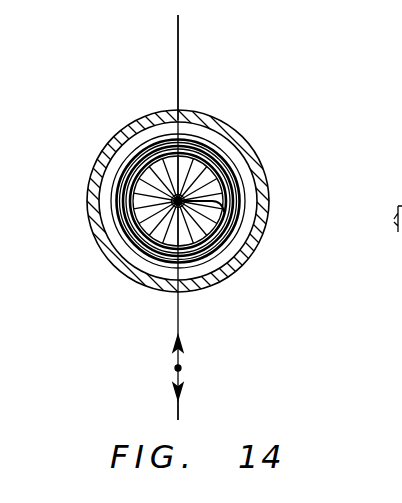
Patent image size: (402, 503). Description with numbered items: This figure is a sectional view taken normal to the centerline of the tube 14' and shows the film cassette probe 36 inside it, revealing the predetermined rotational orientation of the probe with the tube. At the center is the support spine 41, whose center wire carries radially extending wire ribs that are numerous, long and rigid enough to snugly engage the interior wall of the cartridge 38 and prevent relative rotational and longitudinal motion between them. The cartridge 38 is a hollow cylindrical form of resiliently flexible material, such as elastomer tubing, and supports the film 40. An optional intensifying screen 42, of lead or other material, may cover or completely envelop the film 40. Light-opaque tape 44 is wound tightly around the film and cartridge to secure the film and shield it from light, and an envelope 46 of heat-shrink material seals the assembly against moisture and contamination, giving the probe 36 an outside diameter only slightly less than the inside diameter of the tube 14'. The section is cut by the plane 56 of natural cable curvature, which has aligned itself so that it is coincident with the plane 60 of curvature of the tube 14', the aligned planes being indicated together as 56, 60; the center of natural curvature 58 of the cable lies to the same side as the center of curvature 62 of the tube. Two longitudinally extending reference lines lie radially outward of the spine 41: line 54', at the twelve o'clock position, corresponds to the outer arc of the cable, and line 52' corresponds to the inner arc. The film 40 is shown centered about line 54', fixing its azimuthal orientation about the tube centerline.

The tube 14' is at (165, 189).
The film cassette probe 36 is at (239, 155).
The cartridge 38 is at (226, 142).
The film 40 is at (237, 173).
The support spine 41 is at (257, 228).
The intensifying screen 42 is at (236, 203).
The light-opaque tape 44 is at (128, 213).
The envelope 46 is at (121, 246).
The longitudinally extending line 52' is at (189, 244).
The longitudinally extending line 54' is at (178, 166).
The plane of natural curvature 56 is at (178, 48).
The center of natural curvature 58 is at (180, 368).
The plane of tube curvature 60 is at (225, 67).
The center of curvature 62 is at (178, 418).